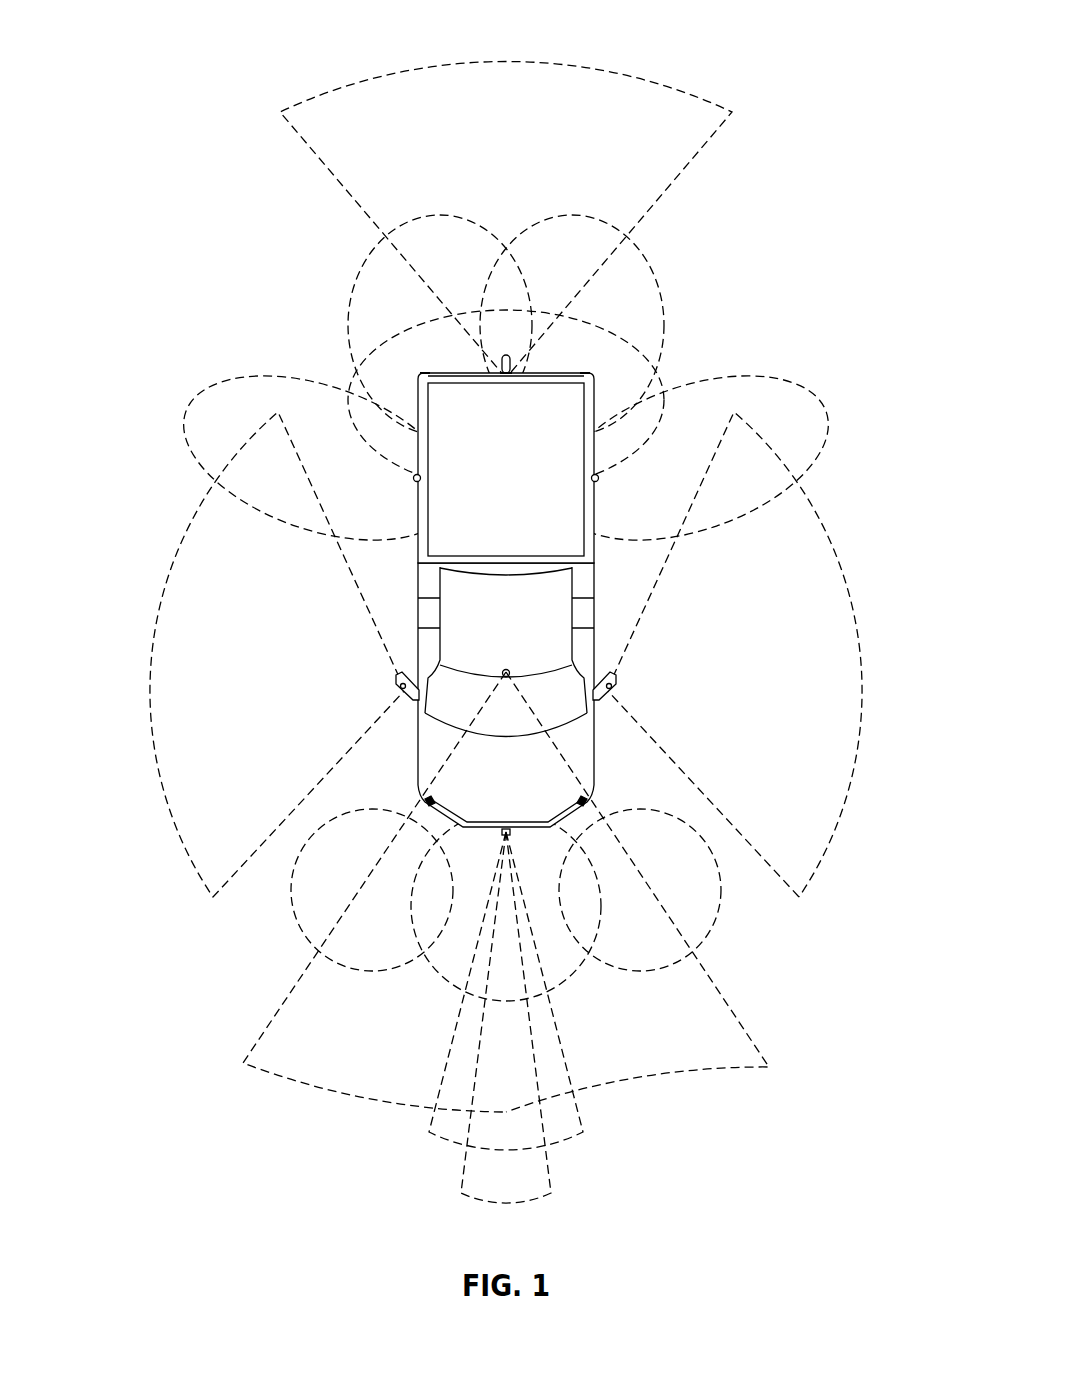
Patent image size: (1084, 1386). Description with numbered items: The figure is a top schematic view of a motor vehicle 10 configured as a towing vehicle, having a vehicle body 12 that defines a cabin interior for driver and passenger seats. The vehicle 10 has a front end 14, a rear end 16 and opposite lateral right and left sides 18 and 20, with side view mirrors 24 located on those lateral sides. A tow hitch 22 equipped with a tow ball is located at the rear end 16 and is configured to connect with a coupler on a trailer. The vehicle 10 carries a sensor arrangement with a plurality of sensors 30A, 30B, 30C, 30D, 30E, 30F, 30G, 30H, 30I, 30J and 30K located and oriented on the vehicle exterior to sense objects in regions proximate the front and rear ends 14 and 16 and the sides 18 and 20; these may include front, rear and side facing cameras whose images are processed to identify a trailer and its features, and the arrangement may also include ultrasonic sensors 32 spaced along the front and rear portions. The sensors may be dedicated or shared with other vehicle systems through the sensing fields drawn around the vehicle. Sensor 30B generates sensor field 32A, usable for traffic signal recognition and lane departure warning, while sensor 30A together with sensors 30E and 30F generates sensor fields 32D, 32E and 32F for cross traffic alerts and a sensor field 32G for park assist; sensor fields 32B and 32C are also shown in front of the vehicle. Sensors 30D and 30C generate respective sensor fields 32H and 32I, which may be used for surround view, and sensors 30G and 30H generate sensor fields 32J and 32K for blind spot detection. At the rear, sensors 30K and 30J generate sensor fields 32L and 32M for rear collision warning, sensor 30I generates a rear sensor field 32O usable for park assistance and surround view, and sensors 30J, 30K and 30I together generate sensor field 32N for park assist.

The motor vehicle 10 is at (616, 578).
The vehicle body 12 is at (580, 742).
The front end 14 is at (500, 829).
The rear end 16 is at (450, 373).
The right side 18 is at (417, 547).
The left side 20 is at (596, 607).
The tow hitch 22 is at (506, 372).
The side view mirrors 24 is at (398, 682).
The sensor 30A is at (503, 833).
The sensor 30B is at (506, 672).
The sensor 30C is at (611, 680).
The sensor 30D is at (400, 677).
The sensor 30E is at (424, 800).
The sensor 30F is at (588, 800).
The sensor 30G is at (415, 478).
The sensor 30H is at (597, 477).
The sensor 30I is at (510, 373).
The sensor 30J is at (586, 373).
The sensor 30K is at (423, 373).
The ultrasonic sensors 32 is at (555, 980).
The sensor field 32A is at (700, 1087).
The field of view 32B is at (575, 1140).
The field of view 32C is at (540, 1203).
The sensor field 32D is at (298, 903).
The sensor field 32E is at (447, 973).
The sensor field 32F is at (715, 903).
The sensor field 32G is at (806, 866).
The sensor field 32H is at (150, 683).
The sensor field 32I is at (857, 627).
The sensor field 32J is at (232, 383).
The sensor field 32K is at (785, 382).
The sensor field 32L is at (440, 216).
The sensor field 32M is at (572, 216).
The sensor field 32N is at (427, 320).
The sensor field 32O is at (553, 62).